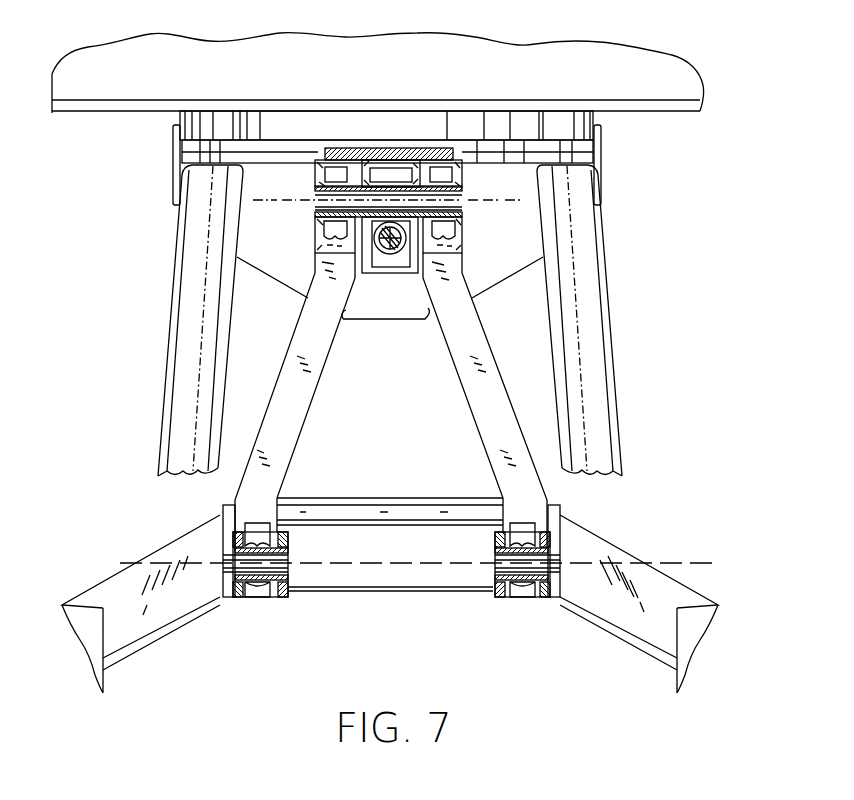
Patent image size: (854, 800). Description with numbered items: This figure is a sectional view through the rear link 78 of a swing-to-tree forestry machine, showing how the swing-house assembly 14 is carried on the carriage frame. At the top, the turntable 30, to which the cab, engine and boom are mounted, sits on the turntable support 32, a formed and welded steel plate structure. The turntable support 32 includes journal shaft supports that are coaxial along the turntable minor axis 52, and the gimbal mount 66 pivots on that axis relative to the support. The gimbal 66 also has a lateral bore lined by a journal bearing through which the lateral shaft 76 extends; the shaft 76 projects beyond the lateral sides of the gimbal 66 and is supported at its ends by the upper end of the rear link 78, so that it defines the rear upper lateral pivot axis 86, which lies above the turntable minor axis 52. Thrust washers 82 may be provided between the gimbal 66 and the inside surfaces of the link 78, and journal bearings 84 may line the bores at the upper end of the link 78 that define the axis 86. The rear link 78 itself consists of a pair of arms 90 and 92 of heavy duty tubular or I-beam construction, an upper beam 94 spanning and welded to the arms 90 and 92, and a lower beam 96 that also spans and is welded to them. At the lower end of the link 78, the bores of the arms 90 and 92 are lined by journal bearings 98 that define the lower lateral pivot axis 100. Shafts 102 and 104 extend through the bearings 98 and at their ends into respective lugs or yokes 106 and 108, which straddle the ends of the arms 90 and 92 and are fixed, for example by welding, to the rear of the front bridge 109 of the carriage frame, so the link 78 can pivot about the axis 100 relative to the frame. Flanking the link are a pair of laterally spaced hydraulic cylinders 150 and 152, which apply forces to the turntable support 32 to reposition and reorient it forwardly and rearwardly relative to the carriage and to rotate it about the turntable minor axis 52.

The swing-house assembly 14 is at (707, 74).
The turntable 30 is at (673, 112).
The turntable support 32 is at (607, 157).
The turntable minor axis 52 is at (386, 266).
The gimbal mount 66 is at (385, 176).
The lateral shaft 76 is at (464, 198).
The rear link 78 is at (391, 400).
The thrust washers 82 is at (365, 176).
The journal bearings 84 is at (326, 190).
The rear upper lateral pivot axis 86 is at (289, 204).
The arm 90 is at (309, 398).
The arm 92 is at (480, 418).
The upper beam 94 is at (334, 150).
The lower beam 96 is at (390, 498).
The journal bearings 98 is at (265, 585).
The lower lateral pivot axis 100 is at (706, 562).
The shaft 102 is at (284, 562).
The shaft 104 is at (494, 558).
The lug or yoke 106 is at (294, 584).
The lug or yoke 108 is at (489, 581).
The front bridge 109 is at (148, 640).
The hydraulic cylinder 150 is at (173, 318).
The hydraulic cylinder 152 is at (610, 318).